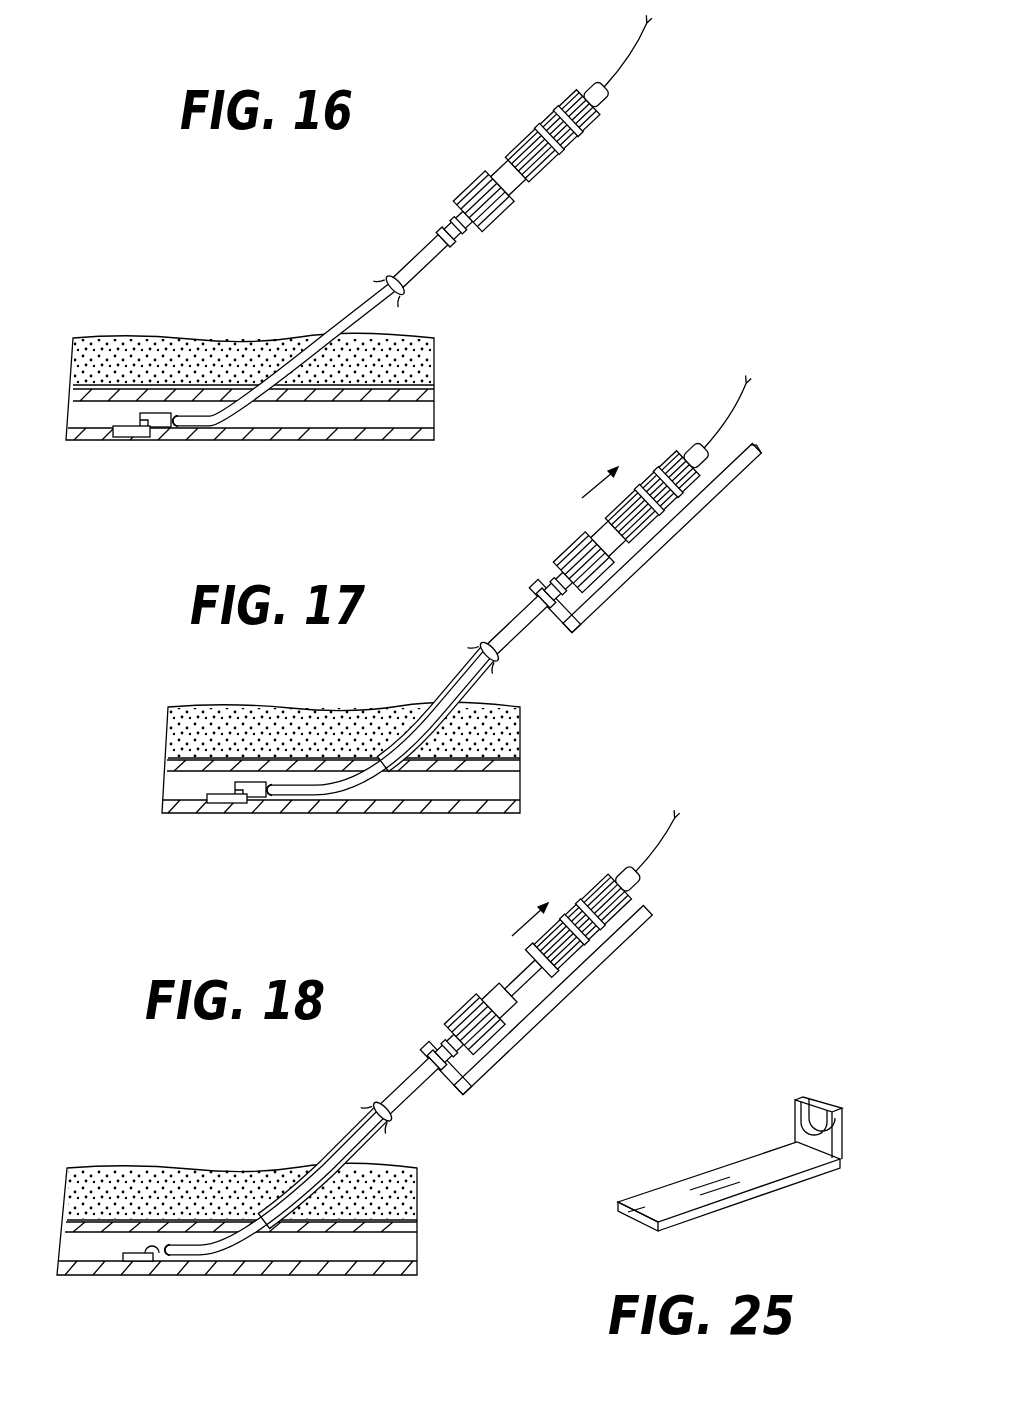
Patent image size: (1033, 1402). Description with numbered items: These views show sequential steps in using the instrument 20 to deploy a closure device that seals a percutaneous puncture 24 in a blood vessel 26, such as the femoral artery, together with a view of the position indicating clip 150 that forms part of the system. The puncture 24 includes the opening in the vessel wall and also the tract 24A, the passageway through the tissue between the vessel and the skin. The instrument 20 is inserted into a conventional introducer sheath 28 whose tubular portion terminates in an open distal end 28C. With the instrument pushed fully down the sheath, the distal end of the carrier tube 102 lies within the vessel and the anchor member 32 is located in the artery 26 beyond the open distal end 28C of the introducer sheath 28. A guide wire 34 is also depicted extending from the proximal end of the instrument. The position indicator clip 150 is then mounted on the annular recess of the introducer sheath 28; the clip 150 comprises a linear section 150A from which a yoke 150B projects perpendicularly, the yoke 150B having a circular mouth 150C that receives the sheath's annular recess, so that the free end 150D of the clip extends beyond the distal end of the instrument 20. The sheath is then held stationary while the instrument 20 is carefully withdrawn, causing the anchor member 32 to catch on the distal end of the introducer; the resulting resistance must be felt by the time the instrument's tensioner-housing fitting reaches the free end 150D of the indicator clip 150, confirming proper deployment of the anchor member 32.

In FIG. 16, the instrument 20 is at (616, 112).
In FIG. 17, the instrument 20 is at (665, 437).
In FIG. 18, the instrument 20 is at (594, 872).
In FIG. 16, the guide wire 34 is at (636, 58).
In FIG. 17, the guide wire 34 is at (724, 418).
In FIG. 18, the guide wire 34 is at (662, 843).
In FIG. 16, the introducer sheath 28 is at (376, 301).
In FIG. 16, the open distal end 28C is at (172, 418).
In FIG. 17, the open distal end 28C is at (285, 805).
In FIG. 18, the open distal end 28C is at (180, 1260).
In FIG. 16, the carrier tube 102 is at (158, 412).
In FIG. 17, the carrier tube 102 is at (257, 783).
In FIG. 16, the anchor member 32 is at (118, 437).
In FIG. 17, the anchor member 32 is at (243, 810).
In FIG. 18, the anchor member 32 is at (127, 1255).
In FIG. 17, the percutaneous puncture 24 is at (397, 770).
In FIG. 18, the percutaneous puncture 24 is at (287, 1237).
In FIG. 17, the tract 24A is at (383, 745).
In FIG. 18, the tract 24A is at (257, 1213).
In FIG. 17, the blood vessel 26 is at (518, 768).
In FIG. 18, the blood vessel 26 is at (395, 1227).
In FIG. 17, the position indicator clip 150 is at (709, 513).
In FIG. 18, the position indicator clip 150 is at (637, 930).
In FIG. 25, the position indicator clip 150 is at (765, 1201).
In FIG. 25, the linear section 150A is at (690, 1187).
In FIG. 17, the yoke 150B is at (552, 616).
In FIG. 25, the yoke 150B is at (838, 1143).
In FIG. 25, the circular mouth 150C is at (817, 1107).
In FIG. 17, the free end 150D is at (755, 449).
In FIG. 25, the free end 150D is at (620, 1213).